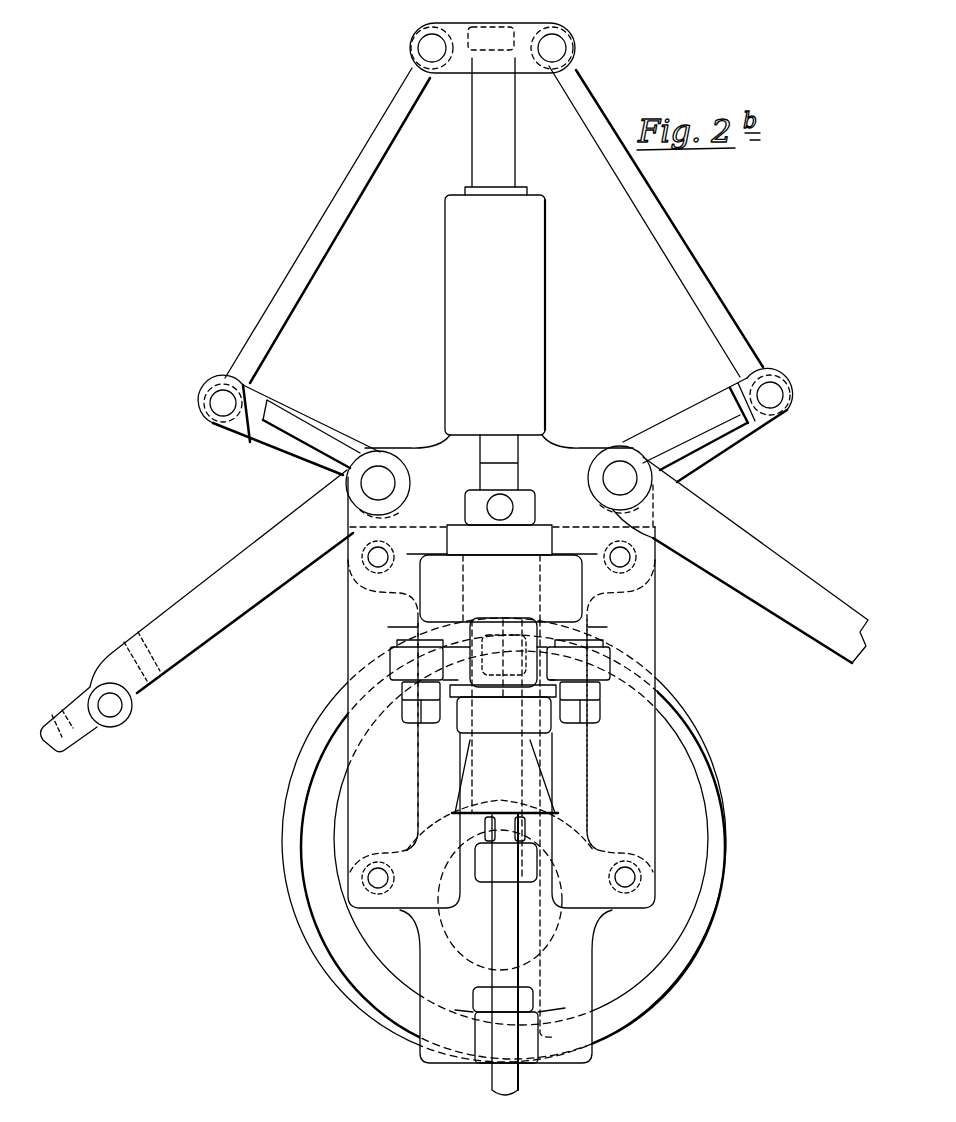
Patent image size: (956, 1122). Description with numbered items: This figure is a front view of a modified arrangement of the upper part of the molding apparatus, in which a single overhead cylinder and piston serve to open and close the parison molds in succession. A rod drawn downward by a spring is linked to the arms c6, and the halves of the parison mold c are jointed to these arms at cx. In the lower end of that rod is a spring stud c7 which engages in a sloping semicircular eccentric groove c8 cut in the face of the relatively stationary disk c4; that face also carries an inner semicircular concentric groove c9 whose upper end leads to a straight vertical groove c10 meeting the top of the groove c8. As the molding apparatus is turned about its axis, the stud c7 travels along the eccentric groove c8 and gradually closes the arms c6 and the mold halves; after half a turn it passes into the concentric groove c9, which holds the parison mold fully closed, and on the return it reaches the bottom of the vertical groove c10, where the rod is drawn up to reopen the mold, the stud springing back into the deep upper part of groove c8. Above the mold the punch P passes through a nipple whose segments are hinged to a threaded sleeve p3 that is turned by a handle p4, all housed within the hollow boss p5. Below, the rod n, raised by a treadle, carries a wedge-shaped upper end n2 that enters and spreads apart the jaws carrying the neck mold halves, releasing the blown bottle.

The punch P is at (495, 246).
The sleeve p3 is at (500, 507).
The handle p4 is at (510, 508).
The hollow boss p5 is at (502, 541).
The arms c6 is at (455, 604).
The joint of parison mold halves cx is at (110, 714).
The spring stud c7 is at (500, 670).
The parison mold c is at (503, 709).
The straight vertical groove c10 is at (505, 776).
The wedge-shaped upper end of rod n2 is at (506, 833).
The rod n is at (505, 954).
The relatively stationary disk c4 is at (523, 692).
The sloping semicircular eccentric groove c8 is at (504, 840).
The inner semicircular concentric groove c9 is at (499, 901).